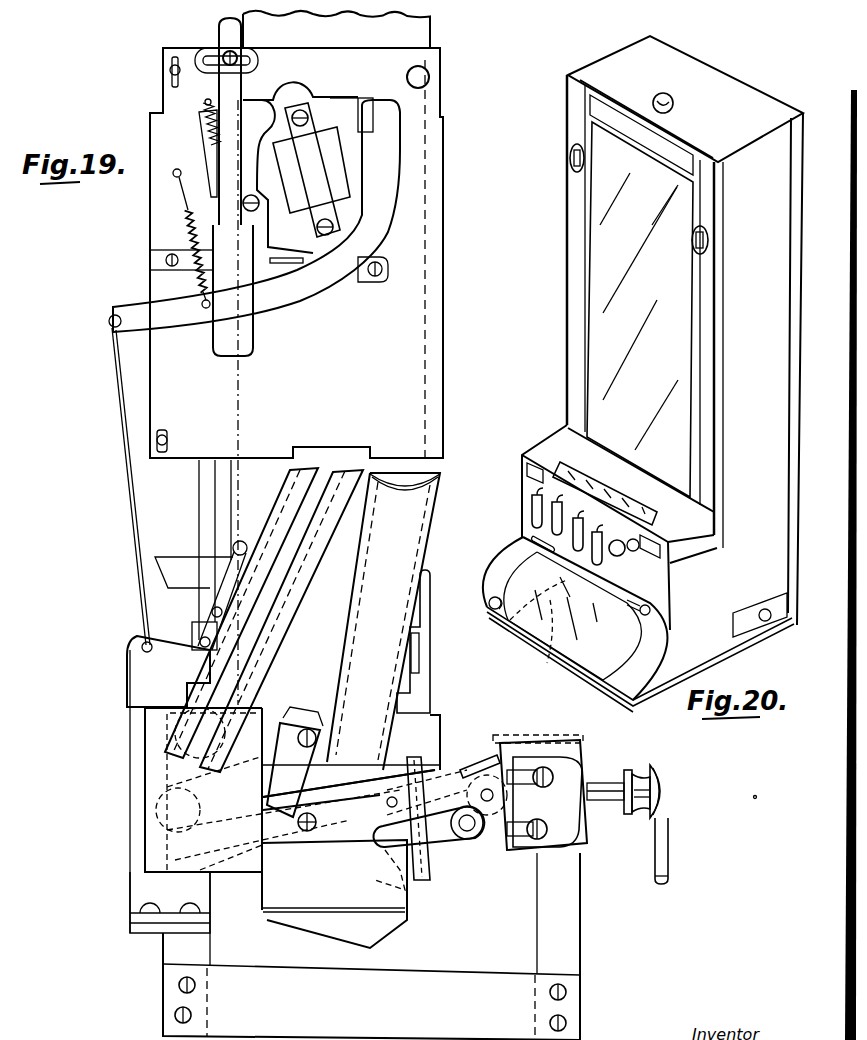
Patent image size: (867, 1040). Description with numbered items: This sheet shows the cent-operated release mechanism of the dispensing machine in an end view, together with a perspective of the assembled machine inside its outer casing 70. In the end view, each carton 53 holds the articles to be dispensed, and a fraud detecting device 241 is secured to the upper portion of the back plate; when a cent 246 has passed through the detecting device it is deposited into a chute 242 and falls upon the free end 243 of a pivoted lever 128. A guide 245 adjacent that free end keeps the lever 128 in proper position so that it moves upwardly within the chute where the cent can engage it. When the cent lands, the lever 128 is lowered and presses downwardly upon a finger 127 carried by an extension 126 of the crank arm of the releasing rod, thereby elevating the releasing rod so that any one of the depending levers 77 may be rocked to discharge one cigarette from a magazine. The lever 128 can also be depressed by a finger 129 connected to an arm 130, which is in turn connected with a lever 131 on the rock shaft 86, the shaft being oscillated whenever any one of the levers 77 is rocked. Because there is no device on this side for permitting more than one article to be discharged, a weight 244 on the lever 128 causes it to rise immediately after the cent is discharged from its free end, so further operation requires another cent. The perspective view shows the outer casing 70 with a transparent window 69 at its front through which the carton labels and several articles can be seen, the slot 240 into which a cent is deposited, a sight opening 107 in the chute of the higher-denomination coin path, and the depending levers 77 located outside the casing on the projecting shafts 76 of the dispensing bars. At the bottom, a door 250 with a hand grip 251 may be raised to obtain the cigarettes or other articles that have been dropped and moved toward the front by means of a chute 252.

In FIG. 19, the carton 53 is at (420, 38).
In FIG. 19, the fraud detecting device 241 is at (410, 150).
In FIG. 19, the chute 242 is at (290, 520).
In FIG. 19, the cent 246 is at (153, 810).
In FIG. 19, the free end 243 is at (200, 778).
In FIG. 19, the guide 245 is at (263, 806).
In FIG. 19, the pivoted lever 128 is at (353, 763).
In FIG. 19, the finger 129 is at (413, 750).
In FIG. 19, the arm 130 is at (417, 762).
In FIG. 19, the extension 126 is at (470, 763).
In FIG. 19, the finger 127 is at (387, 803).
In FIG. 19, the rock shaft 86 is at (471, 831).
In FIG. 19, the lever 131 is at (447, 840).
In FIG. 19, the weight 244 is at (563, 793).
In FIG. 19, the shaft 76 is at (608, 808).
In FIG. 20, the shaft 76 is at (613, 527).
In FIG. 19, the depending levers 77 is at (657, 853).
In FIG. 20, the depending levers 77 is at (595, 530).
In FIG. 20, the transparent window 69 is at (673, 275).
In FIG. 20, the outer casing 70 is at (567, 188).
In FIG. 20, the slot 240 is at (570, 159).
In FIG. 20, the sight opening 107 is at (708, 240).
In FIG. 20, the door 250 is at (530, 642).
In FIG. 20, the hand grip 251 is at (489, 609).
In FIG. 20, the chute 252 is at (538, 630).